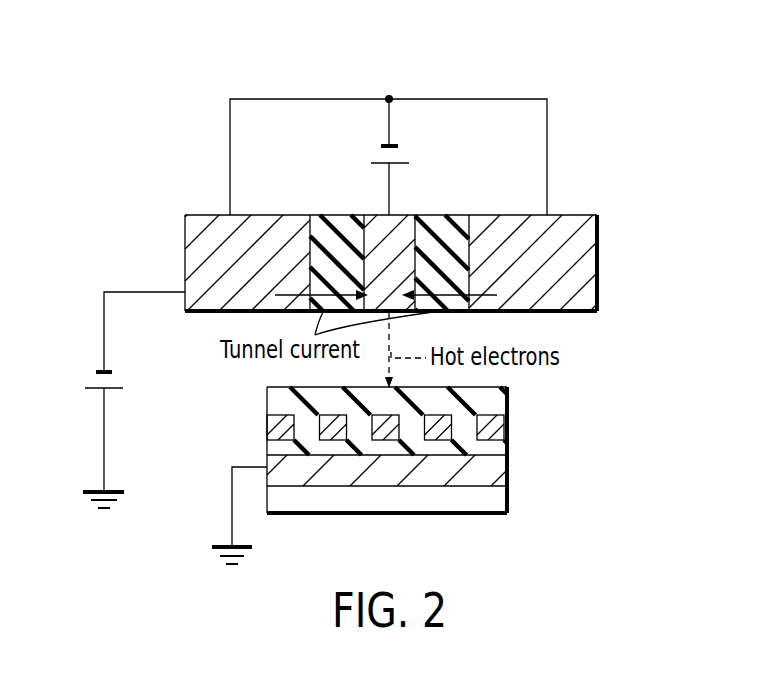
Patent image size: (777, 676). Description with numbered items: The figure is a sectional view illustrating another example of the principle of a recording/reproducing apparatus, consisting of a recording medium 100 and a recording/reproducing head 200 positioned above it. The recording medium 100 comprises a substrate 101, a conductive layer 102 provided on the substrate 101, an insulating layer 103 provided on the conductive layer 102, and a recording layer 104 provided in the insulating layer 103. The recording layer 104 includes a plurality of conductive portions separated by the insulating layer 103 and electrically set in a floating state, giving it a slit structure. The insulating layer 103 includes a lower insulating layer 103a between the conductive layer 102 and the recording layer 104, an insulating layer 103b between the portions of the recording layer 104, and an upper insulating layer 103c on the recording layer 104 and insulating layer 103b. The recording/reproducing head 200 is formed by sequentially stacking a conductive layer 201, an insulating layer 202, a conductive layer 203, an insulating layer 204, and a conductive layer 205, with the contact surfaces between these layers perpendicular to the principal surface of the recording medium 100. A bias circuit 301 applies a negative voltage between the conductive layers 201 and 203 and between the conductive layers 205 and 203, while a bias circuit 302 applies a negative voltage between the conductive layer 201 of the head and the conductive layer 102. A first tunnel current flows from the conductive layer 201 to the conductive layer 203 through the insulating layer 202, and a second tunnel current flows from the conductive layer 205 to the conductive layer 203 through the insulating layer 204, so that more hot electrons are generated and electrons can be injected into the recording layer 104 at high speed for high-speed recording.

The recording medium 100 is at (459, 480).
The substrate 101 is at (488, 500).
The conductive layer 102 is at (488, 477).
The insulating layer 103 is at (459, 471).
The lower insulating layer 103a is at (508, 447).
The insulating layer 103b is at (429, 485).
The upper insulating layer 103c is at (508, 393).
The recording layer 104 is at (384, 438).
The recording/reproducing head 200 is at (393, 235).
The conductive layer 201 is at (185, 248).
The insulating layer 202 is at (333, 215).
The conductive layer 203 is at (409, 215).
The insulating layer 204 is at (468, 215).
The conductive layer 205 is at (592, 248).
The bias circuit 301 is at (334, 99).
The bias circuit 302 is at (232, 498).